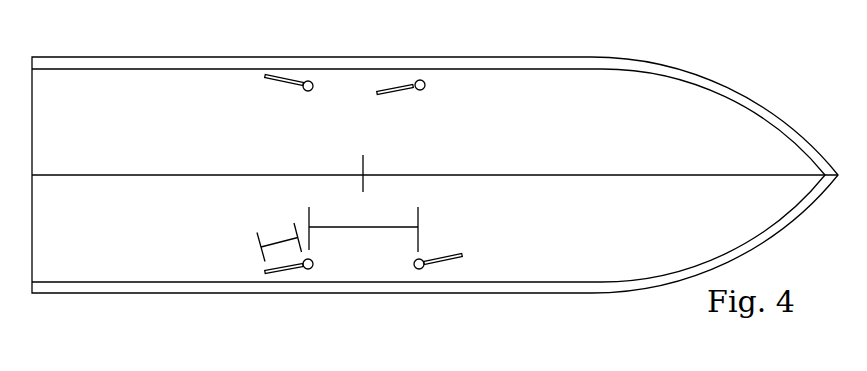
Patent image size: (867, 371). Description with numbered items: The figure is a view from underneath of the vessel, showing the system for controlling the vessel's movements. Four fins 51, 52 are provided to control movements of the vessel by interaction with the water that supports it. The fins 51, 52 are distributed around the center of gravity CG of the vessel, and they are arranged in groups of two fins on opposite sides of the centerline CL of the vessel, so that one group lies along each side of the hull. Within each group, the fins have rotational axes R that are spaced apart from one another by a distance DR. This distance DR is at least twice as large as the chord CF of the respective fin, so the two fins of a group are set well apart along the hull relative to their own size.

The fin 51 is at (290, 78).
The fin 52 is at (405, 87).
The rotational axis R is at (312, 268).
The centerline CL is at (557, 175).
The center of gravity CG is at (363, 170).
The distance DR is at (363, 229).
The chord CF is at (279, 241).